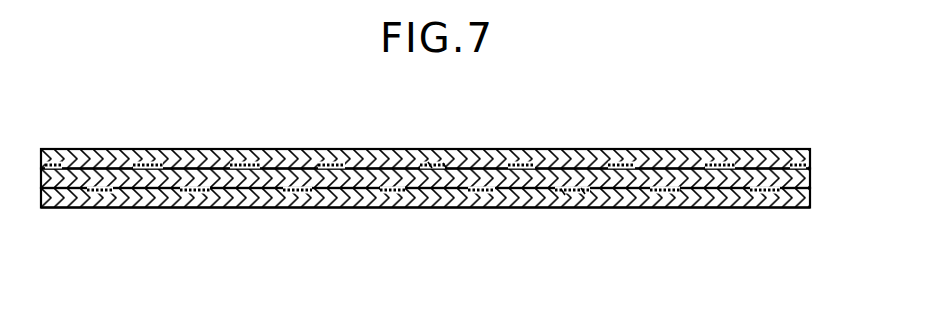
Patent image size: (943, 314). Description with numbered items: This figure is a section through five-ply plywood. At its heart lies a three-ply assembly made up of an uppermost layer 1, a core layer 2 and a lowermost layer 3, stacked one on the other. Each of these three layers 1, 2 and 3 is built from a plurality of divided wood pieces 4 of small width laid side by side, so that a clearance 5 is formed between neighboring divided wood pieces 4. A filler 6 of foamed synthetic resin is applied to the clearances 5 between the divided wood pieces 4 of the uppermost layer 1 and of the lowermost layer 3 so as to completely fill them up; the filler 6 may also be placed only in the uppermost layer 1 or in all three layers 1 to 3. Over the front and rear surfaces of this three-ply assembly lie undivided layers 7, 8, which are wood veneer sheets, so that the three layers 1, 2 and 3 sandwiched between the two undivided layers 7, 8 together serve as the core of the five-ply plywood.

The uppermost layer 1 is at (811, 163).
The core layer 2 is at (811, 177).
The lowermost layer 3 is at (811, 188).
The divided wood pieces 4 is at (147, 161).
The clearance 5 is at (445, 167).
The filler 6 is at (430, 162).
The undivided layer 7 is at (767, 149).
The undivided layer 8 is at (770, 208).